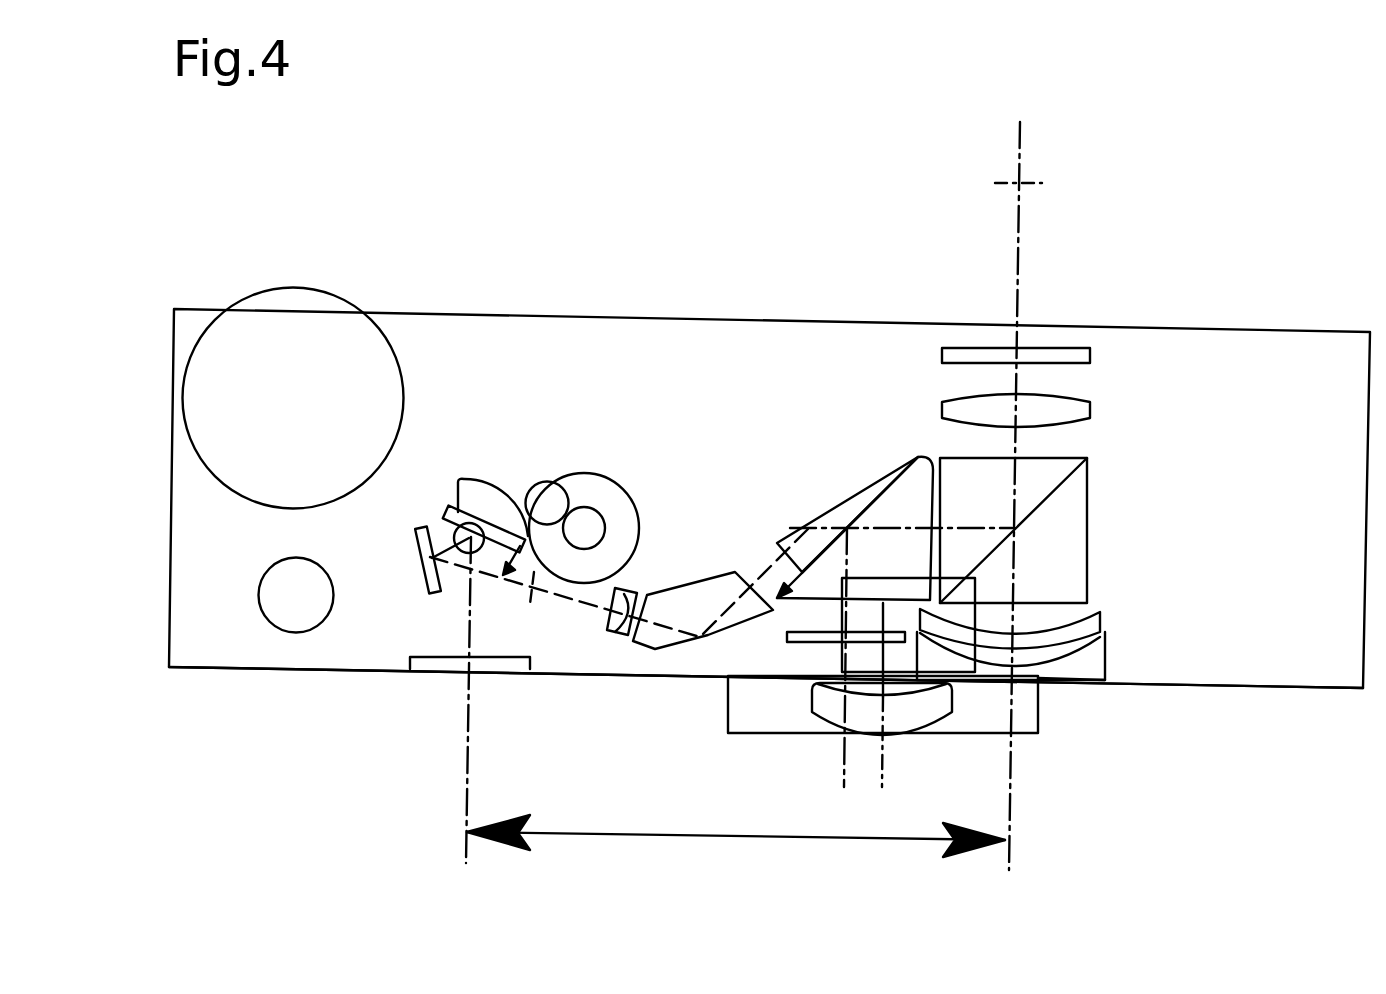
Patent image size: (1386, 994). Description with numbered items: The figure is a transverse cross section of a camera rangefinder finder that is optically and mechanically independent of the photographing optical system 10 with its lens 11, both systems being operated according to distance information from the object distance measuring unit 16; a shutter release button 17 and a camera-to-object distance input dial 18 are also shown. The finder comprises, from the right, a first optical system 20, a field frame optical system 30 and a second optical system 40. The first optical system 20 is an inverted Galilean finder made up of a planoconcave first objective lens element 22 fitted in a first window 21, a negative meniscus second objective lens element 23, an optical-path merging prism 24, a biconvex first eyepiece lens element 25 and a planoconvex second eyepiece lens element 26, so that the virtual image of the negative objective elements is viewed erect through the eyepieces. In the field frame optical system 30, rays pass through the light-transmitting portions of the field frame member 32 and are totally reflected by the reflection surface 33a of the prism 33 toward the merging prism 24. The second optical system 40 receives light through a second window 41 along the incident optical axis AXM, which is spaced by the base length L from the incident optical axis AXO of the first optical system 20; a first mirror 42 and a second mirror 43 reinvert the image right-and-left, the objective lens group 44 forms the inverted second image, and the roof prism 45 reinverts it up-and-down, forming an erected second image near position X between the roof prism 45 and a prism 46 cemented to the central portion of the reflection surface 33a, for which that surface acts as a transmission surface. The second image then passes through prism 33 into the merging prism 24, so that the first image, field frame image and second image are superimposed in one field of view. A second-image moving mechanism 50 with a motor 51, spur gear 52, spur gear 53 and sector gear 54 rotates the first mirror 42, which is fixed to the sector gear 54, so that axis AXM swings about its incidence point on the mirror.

The photographing optical system 10 is at (780, 735).
The objective lens 11 is at (920, 727).
The object distance measuring unit 16 is at (840, 666).
The shutter release button 17 is at (267, 618).
The camera-to-object distance input dial 18 is at (398, 355).
The first optical system 20 is at (1088, 547).
The first window 21 is at (1075, 716).
The first objective lens element 22 is at (1105, 668).
The second objective lens element 23 is at (1102, 614).
The optical-path merging prism 24 is at (1087, 524).
The first eyepiece lens element 25 is at (1090, 412).
The second eyepiece lens element 26 is at (1090, 356).
The field frame optical system 30 is at (848, 465).
The field frame member 32 is at (817, 632).
The prism 33 is at (887, 543).
The reflection surface 33a is at (893, 482).
The second optical system 40 is at (530, 633).
The second window 41 is at (432, 670).
The first mirror 42 is at (445, 523).
The second mirror 43 is at (420, 587).
The objective lens group 44 is at (605, 622).
The roof prism 45 is at (687, 585).
The prism 46 is at (790, 548).
The second-image moving mechanism 50 is at (577, 470).
The motor 51 is at (640, 505).
The spur gear 52 is at (590, 507).
The spur gear 53 is at (543, 481).
The sector gear 54 is at (491, 482).
The image-forming position X is at (757, 571).
The base length L is at (736, 845).
The incident optical axis AXM is at (465, 812).
The incident optical axis AXO is at (1008, 808).